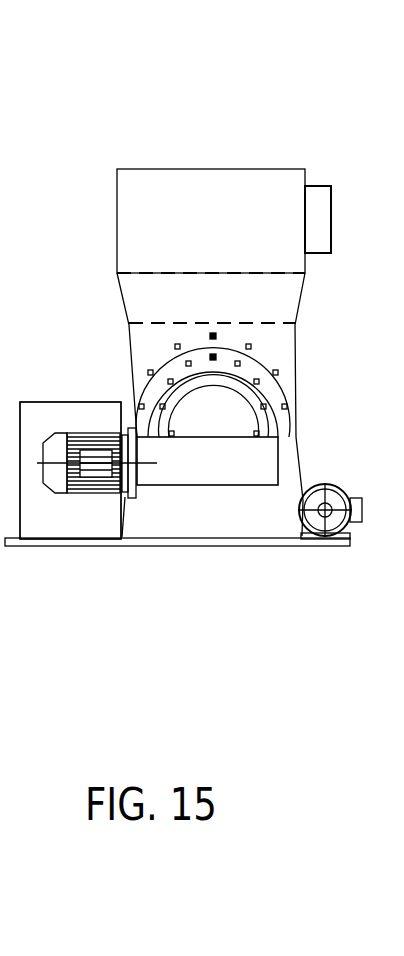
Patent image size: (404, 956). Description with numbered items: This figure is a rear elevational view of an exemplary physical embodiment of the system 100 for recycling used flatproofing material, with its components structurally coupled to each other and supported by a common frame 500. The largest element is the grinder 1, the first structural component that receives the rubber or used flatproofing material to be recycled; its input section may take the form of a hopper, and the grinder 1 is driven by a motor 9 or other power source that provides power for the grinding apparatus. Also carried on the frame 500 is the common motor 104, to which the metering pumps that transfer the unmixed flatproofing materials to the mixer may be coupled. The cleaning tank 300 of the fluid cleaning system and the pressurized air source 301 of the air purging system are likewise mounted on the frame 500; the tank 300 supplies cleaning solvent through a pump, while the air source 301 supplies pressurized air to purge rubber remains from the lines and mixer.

The system 100 is at (220, 100).
The grinder 1 is at (303, 302).
The cleaning tank 300 is at (102, 402).
The pressurized air source 301 is at (70, 470).
The motor 9 is at (82, 431).
The common motor 104 is at (328, 485).
The common frame 500 is at (122, 538).